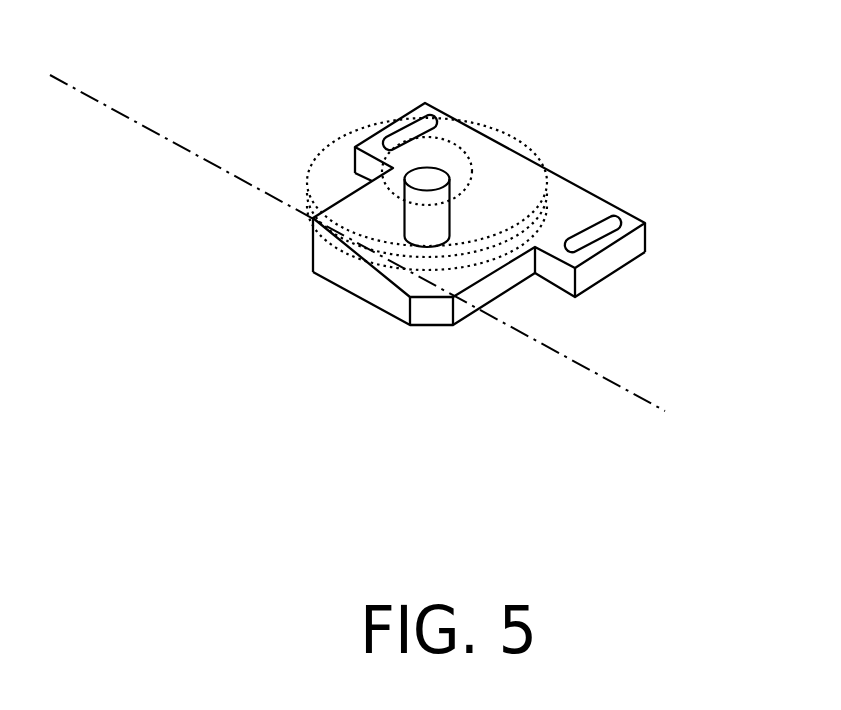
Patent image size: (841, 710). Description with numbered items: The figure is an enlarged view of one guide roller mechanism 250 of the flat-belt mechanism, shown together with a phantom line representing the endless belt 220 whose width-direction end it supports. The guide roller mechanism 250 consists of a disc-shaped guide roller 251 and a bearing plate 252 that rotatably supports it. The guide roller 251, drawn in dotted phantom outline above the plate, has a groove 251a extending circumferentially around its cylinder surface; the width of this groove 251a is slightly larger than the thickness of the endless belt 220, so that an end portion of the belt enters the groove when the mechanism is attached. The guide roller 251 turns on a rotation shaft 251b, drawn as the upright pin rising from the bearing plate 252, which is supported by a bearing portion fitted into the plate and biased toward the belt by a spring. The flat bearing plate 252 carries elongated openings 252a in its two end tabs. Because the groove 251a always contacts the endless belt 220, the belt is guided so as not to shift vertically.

The endless belt 220 is at (130, 118).
The guide roller mechanism 250 is at (505, 74).
The guide roller 251 is at (395, 154).
The groove 251a is at (307, 213).
The rotation shaft 251b is at (450, 214).
The bearing plate 252 is at (593, 203).
The slot 252a is at (421, 128).